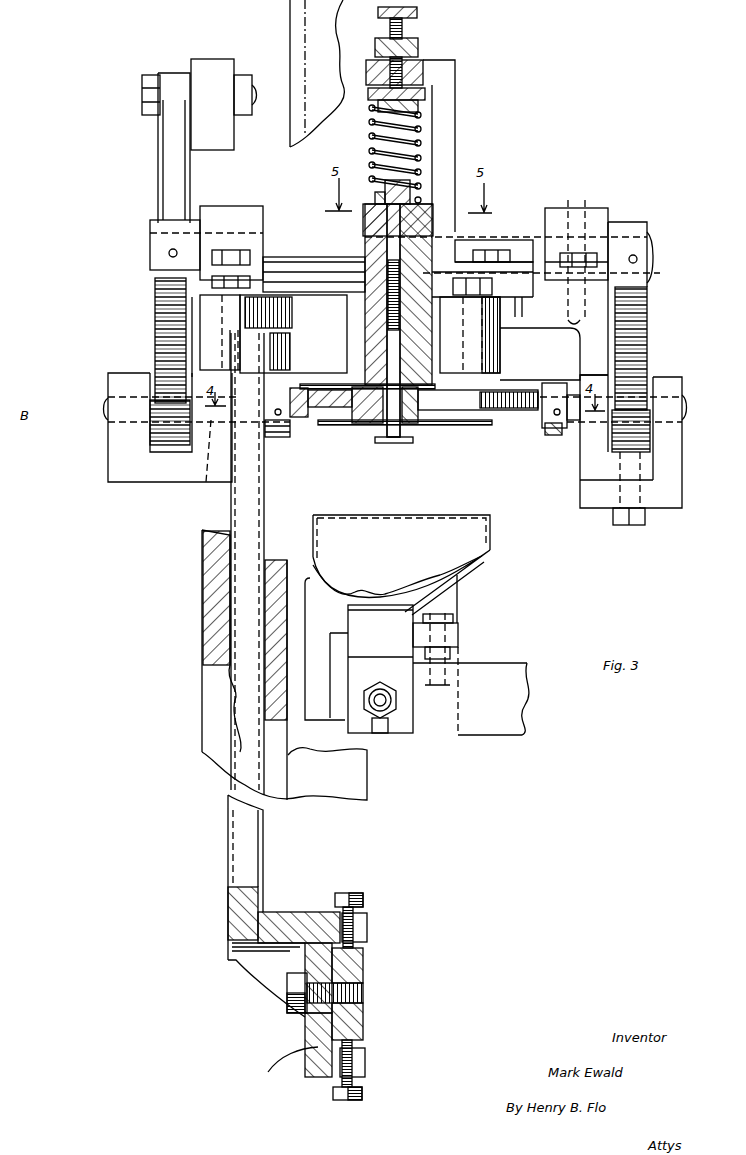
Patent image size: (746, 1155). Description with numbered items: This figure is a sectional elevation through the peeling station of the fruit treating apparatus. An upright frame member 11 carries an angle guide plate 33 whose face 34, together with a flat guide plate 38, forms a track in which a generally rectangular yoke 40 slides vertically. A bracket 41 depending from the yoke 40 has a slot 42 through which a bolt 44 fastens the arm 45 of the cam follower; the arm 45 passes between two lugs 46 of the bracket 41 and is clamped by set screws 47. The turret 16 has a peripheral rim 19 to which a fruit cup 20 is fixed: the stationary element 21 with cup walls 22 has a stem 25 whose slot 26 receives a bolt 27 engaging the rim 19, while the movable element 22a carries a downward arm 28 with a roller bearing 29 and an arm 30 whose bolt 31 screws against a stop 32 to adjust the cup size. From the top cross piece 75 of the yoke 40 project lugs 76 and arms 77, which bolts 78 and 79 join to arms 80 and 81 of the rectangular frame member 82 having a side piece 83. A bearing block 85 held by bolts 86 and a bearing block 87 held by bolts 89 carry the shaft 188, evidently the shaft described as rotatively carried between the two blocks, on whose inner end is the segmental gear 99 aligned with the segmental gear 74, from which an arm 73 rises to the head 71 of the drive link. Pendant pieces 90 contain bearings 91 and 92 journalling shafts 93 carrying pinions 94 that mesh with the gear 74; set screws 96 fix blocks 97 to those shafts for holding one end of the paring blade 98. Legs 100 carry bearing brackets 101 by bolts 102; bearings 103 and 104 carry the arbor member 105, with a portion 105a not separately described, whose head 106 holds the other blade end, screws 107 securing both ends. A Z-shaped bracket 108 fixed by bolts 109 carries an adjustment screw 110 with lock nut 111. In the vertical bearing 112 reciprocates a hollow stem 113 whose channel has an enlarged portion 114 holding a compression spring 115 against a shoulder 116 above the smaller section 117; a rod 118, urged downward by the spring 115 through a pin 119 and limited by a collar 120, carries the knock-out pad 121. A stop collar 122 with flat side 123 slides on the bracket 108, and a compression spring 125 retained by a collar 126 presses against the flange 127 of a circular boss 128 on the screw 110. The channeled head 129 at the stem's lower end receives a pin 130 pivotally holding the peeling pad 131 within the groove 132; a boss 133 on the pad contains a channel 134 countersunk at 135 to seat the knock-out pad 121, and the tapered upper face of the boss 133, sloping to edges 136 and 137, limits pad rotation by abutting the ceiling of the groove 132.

The upright frame member 11 is at (298, 96).
The turret 16 is at (513, 730).
The peripheral rim 19 is at (515, 663).
The fruit cup 20 is at (491, 518).
The stationary element 21 is at (405, 614).
The cup walls 22 is at (488, 532).
The movable element 22a is at (450, 590).
The stem 25 is at (400, 735).
The slot 26 is at (375, 735).
The bolt 27 is at (372, 702).
The arm 28 is at (315, 657).
The roller bearing 29 is at (298, 678).
The arm 30 is at (455, 636).
The bolt 31 is at (455, 621).
The stop 32 is at (455, 660).
The angle guide plate 33 is at (240, 752).
The face 34 is at (266, 560).
The flat guide plate 38 is at (210, 727).
The yoke 40 is at (266, 538).
The bracket 41 is at (278, 922).
The slot 42 is at (317, 1015).
The bolt 44 is at (364, 997).
The arm 45 is at (364, 967).
The lug 46 is at (367, 930).
The set screw 47 is at (365, 900).
The head 71 is at (235, 143).
The arm 73 is at (166, 188).
The segmental gear 74 is at (210, 315).
The top cross piece 75 is at (268, 520).
The lug 76 is at (212, 343).
The arm 77 is at (293, 334).
The bolt 78 is at (492, 285).
The bolt 79 is at (250, 281).
The arm 80 is at (492, 333).
The arm 81 is at (175, 323).
The frame member 82 is at (526, 330).
The side piece 83 is at (550, 325).
The bearing block 85 is at (570, 213).
The bolt 86 is at (575, 355).
The bearing block 87 is at (226, 212).
The bolt 89 is at (247, 258).
The pendant piece 90 is at (199, 446).
The bearing 91 is at (110, 425).
The bearing 92 is at (189, 482).
The shaft 93 is at (104, 406).
The pinion 94 is at (160, 421).
The set screw 96 is at (285, 430).
The block 97 is at (268, 428).
The paring blade 98 is at (507, 412).
The segmental gear 99 is at (640, 343).
The leg 100 is at (590, 463).
The bearing bracket 101 is at (670, 497).
The bolt 102 is at (648, 517).
The bearing 103 is at (662, 428).
The bearing 104 is at (580, 440).
The arbor member 105 is at (684, 413).
The shaft portion 105a is at (642, 438).
The head 106 is at (553, 430).
The screw 107 is at (298, 416).
The Z-shaped bracket 108 is at (446, 135).
The bolt 109 is at (488, 250).
The adjustment screw 110 is at (404, 26).
The lock nut 111 is at (419, 50).
The vertical bearing 112 is at (433, 238).
The hollow stem 113 is at (436, 249).
The enlarged portion 114 is at (388, 290).
The compression spring 115 is at (365, 290).
The shoulder 116 is at (365, 250).
The smaller section 117 is at (365, 243).
The rod 118 is at (425, 222).
The pin 119 is at (372, 350).
The collar 120 is at (410, 186).
The knock-out pad 121 is at (392, 440).
The stop collar 122 is at (395, 197).
The flat side 123 is at (432, 207).
The compression spring 125 is at (420, 152).
The collar 126 is at (421, 190).
The flange 127 is at (426, 93).
The circular boss 128 is at (420, 108).
The channeled head 129 is at (378, 370).
The pin 130 is at (358, 412).
The peeling pad 131 is at (460, 428).
The groove 132 is at (420, 401).
The boss 133 is at (362, 426).
The channel 134 is at (410, 426).
The countersink 135 is at (382, 425).
The edge 136 is at (342, 373).
The edge 137 is at (420, 389).
The shaft 188 is at (524, 247).